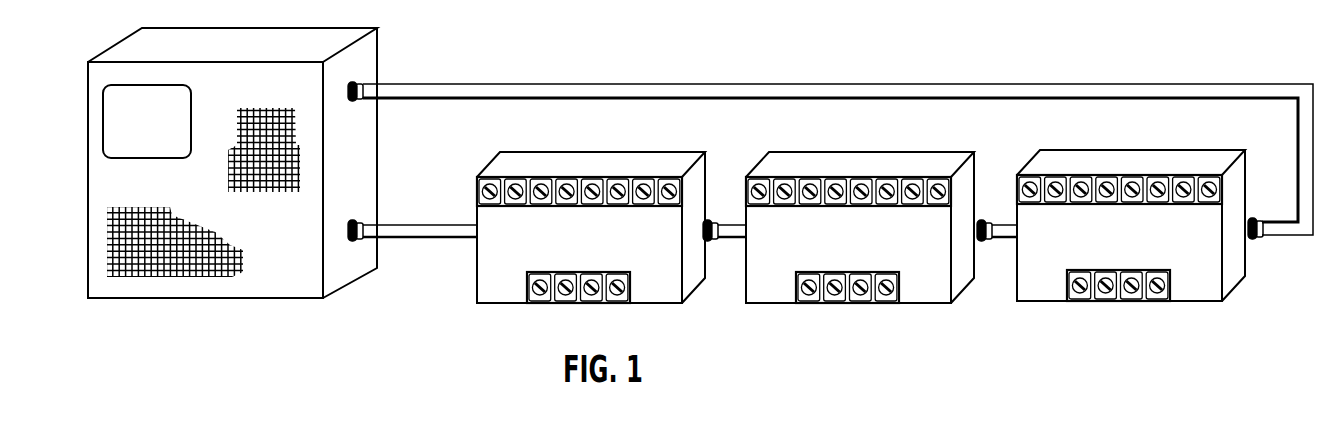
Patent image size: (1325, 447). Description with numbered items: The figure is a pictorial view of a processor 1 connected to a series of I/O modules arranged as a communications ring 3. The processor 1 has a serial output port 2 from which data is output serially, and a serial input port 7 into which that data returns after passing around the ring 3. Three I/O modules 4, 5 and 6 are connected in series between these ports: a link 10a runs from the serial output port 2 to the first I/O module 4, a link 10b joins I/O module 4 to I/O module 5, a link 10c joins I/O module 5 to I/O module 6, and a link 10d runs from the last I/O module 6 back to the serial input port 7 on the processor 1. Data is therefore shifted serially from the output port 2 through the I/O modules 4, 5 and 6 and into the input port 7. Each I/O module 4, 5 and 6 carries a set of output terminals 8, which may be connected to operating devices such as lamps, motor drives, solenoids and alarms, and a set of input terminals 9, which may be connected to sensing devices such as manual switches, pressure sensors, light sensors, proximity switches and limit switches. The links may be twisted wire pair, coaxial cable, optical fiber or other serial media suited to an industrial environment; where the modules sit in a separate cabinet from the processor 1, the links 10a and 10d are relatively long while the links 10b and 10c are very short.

The processor 1 is at (282, 302).
The serial output port 2 is at (353, 243).
The communications ring 3 is at (745, 74).
The I/O module 4 is at (660, 306).
The I/O module 5 is at (928, 306).
The I/O module 6 is at (1195, 304).
The serial input port 7 is at (361, 80).
The output terminals 8 is at (563, 300).
The input terminals 9 is at (587, 177).
The link 10a is at (443, 222).
The link 10b is at (713, 218).
The link 10c is at (989, 220).
The link 10d is at (1018, 83).